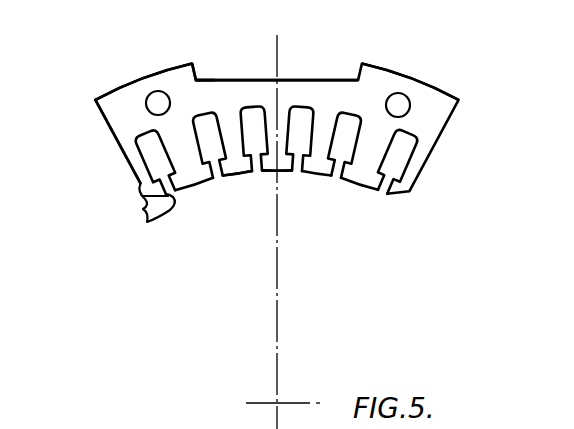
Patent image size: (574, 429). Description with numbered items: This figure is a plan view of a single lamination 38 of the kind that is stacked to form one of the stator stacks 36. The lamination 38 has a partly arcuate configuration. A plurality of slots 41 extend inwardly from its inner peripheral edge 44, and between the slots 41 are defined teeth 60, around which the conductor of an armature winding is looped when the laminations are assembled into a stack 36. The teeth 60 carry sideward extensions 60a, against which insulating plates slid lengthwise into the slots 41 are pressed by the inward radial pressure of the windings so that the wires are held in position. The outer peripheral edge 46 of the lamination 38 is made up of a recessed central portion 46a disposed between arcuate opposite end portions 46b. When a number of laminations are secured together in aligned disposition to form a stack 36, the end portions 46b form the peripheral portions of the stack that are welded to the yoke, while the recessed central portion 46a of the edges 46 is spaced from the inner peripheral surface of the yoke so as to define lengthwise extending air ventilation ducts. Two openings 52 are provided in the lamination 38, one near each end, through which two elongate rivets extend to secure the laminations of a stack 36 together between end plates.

The stack 36 is at (117, 150).
The lamination 38 is at (458, 98).
The slots 41 is at (218, 183).
The inner peripheral edge 44 is at (286, 176).
The outer peripheral edge 46 is at (306, 79).
The recessed central portion 46a is at (210, 78).
The arcuate opposite end portions 46b is at (112, 88).
The openings 52 is at (149, 93).
The teeth 60 is at (242, 189).
The sideward extensions 60a is at (153, 216).